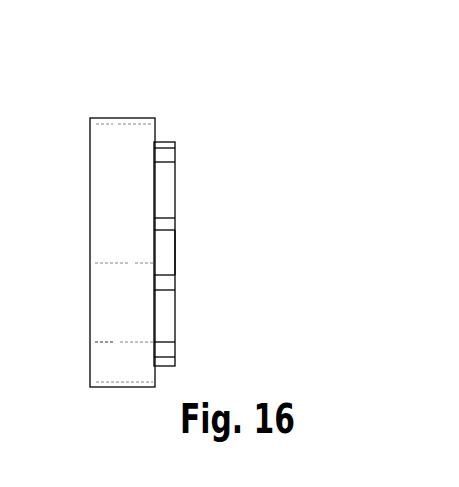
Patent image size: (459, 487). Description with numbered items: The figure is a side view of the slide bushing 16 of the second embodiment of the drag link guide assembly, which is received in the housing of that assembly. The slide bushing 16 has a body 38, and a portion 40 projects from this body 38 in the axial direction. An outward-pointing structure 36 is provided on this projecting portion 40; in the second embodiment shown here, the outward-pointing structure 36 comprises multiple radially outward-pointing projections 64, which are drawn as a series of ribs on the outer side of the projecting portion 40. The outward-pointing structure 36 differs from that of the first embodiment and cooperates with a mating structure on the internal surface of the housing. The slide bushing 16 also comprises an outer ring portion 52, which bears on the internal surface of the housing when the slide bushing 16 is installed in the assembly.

The slide bushing 16 is at (154, 229).
The outward-pointing structure 36 is at (227, 242).
The body 38 is at (112, 177).
The portion 40 is at (176, 249).
The outer ring portion 52 is at (112, 309).
The radially outward-pointing projections 64 is at (176, 194).